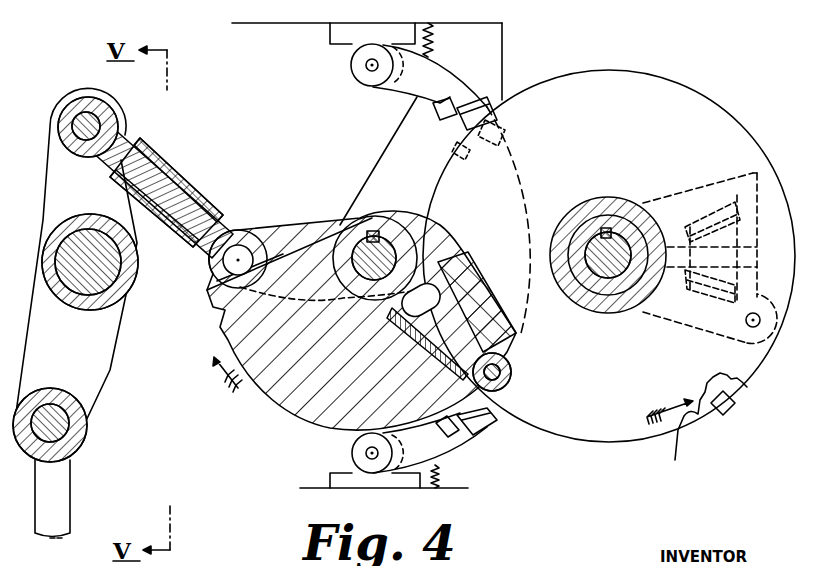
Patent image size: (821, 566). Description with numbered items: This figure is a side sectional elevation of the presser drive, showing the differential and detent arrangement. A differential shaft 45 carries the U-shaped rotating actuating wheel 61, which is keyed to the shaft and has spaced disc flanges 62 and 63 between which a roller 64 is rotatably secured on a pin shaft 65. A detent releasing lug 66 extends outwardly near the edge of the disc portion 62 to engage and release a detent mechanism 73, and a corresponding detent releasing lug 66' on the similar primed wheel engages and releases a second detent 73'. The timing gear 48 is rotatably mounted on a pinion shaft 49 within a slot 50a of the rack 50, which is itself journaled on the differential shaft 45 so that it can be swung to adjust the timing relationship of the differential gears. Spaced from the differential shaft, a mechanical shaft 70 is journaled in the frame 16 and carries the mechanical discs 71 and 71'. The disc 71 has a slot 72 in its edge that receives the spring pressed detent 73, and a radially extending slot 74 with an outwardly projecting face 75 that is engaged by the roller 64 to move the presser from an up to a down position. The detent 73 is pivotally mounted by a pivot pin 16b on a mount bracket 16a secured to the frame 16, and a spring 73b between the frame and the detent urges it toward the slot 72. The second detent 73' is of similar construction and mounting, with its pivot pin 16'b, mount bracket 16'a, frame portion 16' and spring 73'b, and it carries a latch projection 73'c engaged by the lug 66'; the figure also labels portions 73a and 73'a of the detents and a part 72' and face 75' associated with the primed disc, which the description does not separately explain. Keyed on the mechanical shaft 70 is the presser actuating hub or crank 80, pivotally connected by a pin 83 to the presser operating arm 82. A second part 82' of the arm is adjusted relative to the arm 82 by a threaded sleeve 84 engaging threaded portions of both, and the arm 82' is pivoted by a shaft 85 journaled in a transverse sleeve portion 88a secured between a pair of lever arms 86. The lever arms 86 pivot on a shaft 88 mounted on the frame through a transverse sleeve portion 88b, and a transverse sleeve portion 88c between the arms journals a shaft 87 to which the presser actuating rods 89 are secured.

The frame 16 is at (354, 495).
The mount bracket 16a is at (330, 476).
The pivot pin 16b is at (365, 453).
The upper frame bracket 16' is at (367, 50).
The upper bracket step 16'a is at (337, 38).
The upper pivot pin 16'b is at (346, 65).
The differential shaft 45 is at (607, 262).
The timing gear 48 is at (714, 207).
The pinion shaft 49 is at (675, 268).
The rack 50 is at (705, 330).
The slot 50a is at (714, 209).
The rotating actuating wheel 61 is at (604, 198).
The disc flange 62 is at (697, 428).
The disc flange 63 is at (680, 80).
The roller 64 is at (553, 395).
The pin shaft 65 is at (505, 370).
The detent releasing lug 66 is at (740, 423).
The detent releasing lug 66' is at (431, 154).
The mechanical shaft 70 is at (362, 250).
The mechanical disc 71 is at (361, 325).
The second mechanical disc 71' is at (378, 159).
The slot 72 is at (192, 313).
The stop 72' is at (509, 77).
The detent 73 is at (459, 440).
The follower pad 73a is at (443, 422).
The spring 73b is at (440, 468).
The second detent 73' is at (435, 87).
The upper follower pad 73'a is at (421, 85).
The upper spring 73'b is at (456, 40).
The latch projection 73'c is at (523, 126).
The radially extending slot 74 is at (495, 347).
The projecting face 75 is at (427, 329).
The spring (alternate position) 75' is at (495, 244).
The presser actuating hub 80 is at (292, 230).
The presser operating arm 82 is at (238, 234).
The operating arm 82' is at (158, 181).
The pin 83 is at (233, 260).
The threaded sleeve 84 is at (187, 180).
The shaft 85 is at (92, 122).
The lever arms 86 is at (112, 370).
The shaft 87 is at (63, 422).
The shaft 88 is at (102, 268).
The transverse sleeve portion 88a is at (70, 104).
The transverse sleeve portion 88b is at (106, 310).
The transverse sleeve portion 88c is at (53, 388).
The presser actuating rods 89 is at (68, 483).